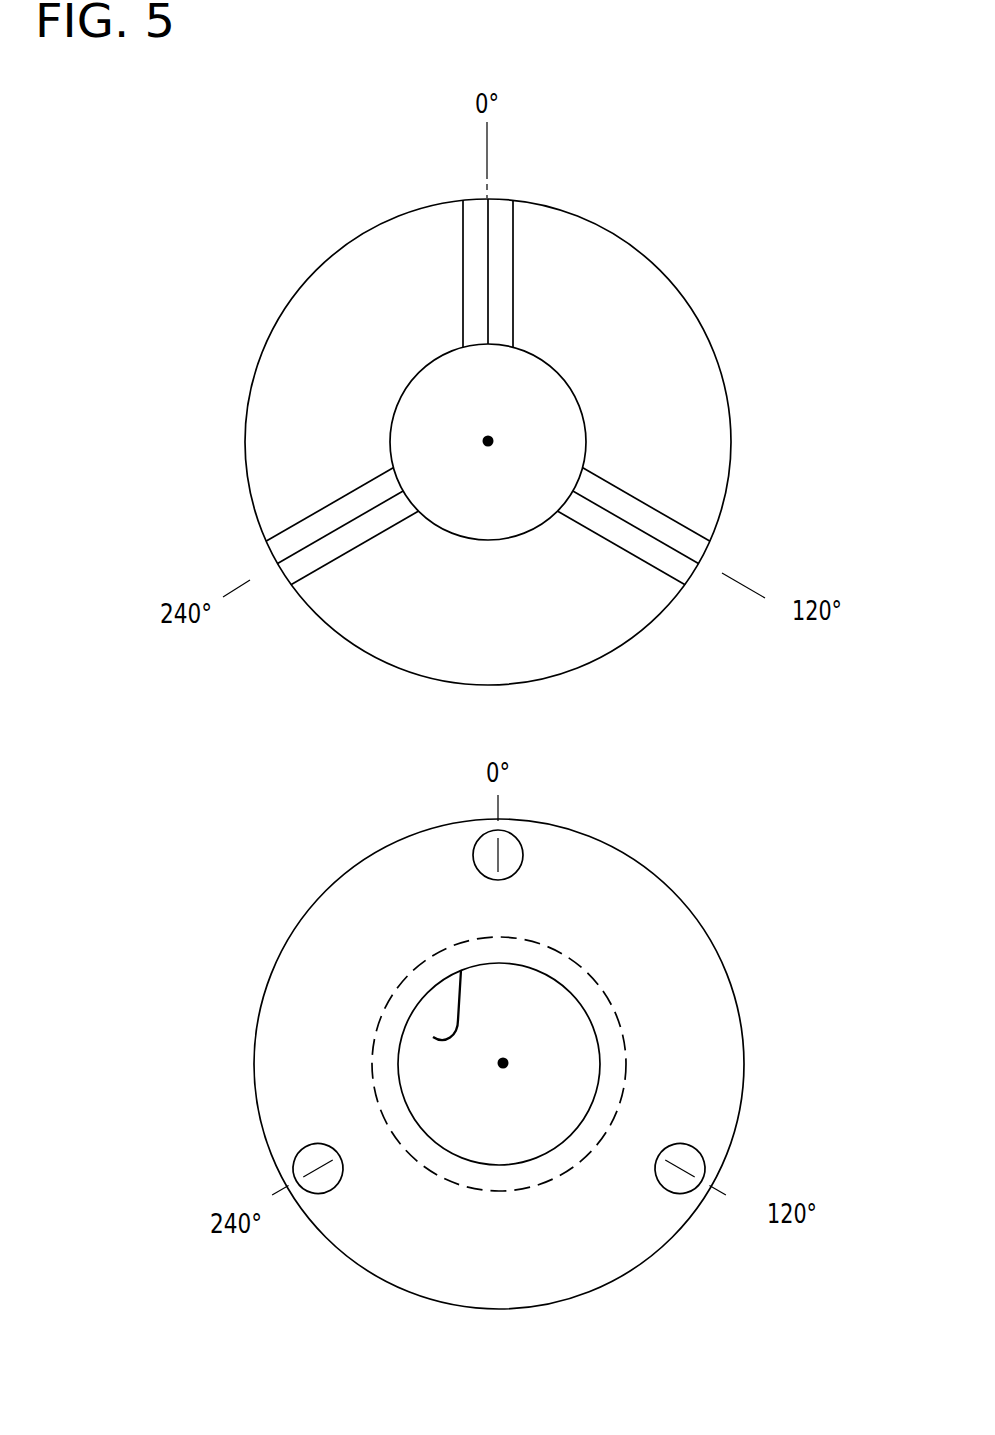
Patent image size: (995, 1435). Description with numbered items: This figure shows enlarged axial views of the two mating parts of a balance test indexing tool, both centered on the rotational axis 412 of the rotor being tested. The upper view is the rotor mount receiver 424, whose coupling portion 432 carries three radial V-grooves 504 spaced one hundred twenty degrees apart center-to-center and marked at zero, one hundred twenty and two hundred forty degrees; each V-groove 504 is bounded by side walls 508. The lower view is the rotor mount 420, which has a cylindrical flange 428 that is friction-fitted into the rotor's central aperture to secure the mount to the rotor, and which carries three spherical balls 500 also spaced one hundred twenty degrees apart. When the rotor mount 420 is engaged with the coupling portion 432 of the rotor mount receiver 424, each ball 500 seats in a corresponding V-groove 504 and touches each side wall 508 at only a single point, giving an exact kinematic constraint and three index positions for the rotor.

The rotational axis 412 is at (488, 440).
The rotor mount 420 is at (218, 1027).
The rotor mount receiver 424 is at (300, 661).
The cylindrical flange 428 is at (540, 1185).
The coupling portion 432 is at (433, 1037).
The spherical balls 500 is at (523, 850).
The radial V-grooves 504 is at (525, 258).
The side walls 508 is at (501, 215).